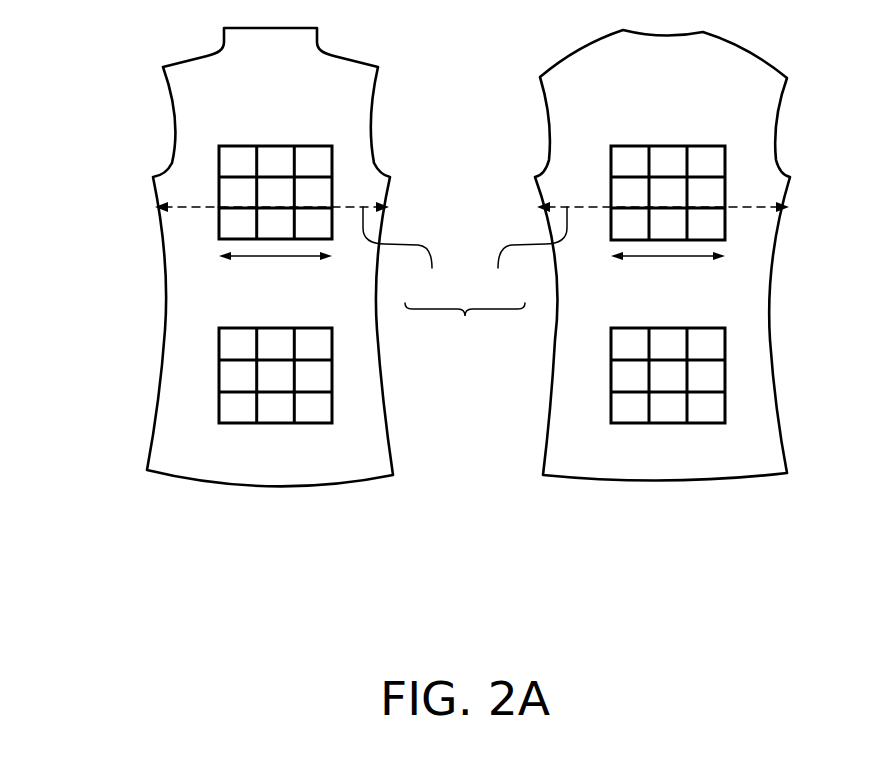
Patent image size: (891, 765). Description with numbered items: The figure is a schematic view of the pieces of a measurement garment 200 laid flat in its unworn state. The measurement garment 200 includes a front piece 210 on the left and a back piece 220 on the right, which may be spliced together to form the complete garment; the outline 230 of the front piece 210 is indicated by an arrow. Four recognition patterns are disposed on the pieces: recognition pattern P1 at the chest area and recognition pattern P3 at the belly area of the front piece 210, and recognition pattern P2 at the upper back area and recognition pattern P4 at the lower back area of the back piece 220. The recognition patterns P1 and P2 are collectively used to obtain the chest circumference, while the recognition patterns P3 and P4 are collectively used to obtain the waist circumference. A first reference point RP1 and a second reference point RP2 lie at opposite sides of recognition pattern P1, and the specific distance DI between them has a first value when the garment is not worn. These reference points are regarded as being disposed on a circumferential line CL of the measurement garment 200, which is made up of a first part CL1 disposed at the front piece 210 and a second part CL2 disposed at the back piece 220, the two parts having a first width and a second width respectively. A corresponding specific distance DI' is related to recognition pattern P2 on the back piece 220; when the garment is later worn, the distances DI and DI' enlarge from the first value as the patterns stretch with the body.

The measurement garment 200 is at (455, 321).
The front piece 210 is at (261, 257).
The back piece 220 is at (670, 255).
The contour line of pattern piece 230 is at (152, 122).
The recognition pattern P1 is at (332, 147).
The recognition pattern P2 is at (725, 158).
The recognition pattern P3 is at (220, 380).
The recognition pattern P4 is at (725, 342).
The first reference point RP1 is at (219, 207).
The second reference point RP2 is at (333, 207).
The first part of the circumferential line CL1 is at (405, 258).
The second part of the circumferential line CL2 is at (522, 258).
The circumferential line CL is at (465, 330).
The specific distance DI is at (275, 274).
The specific distance DI' is at (668, 275).